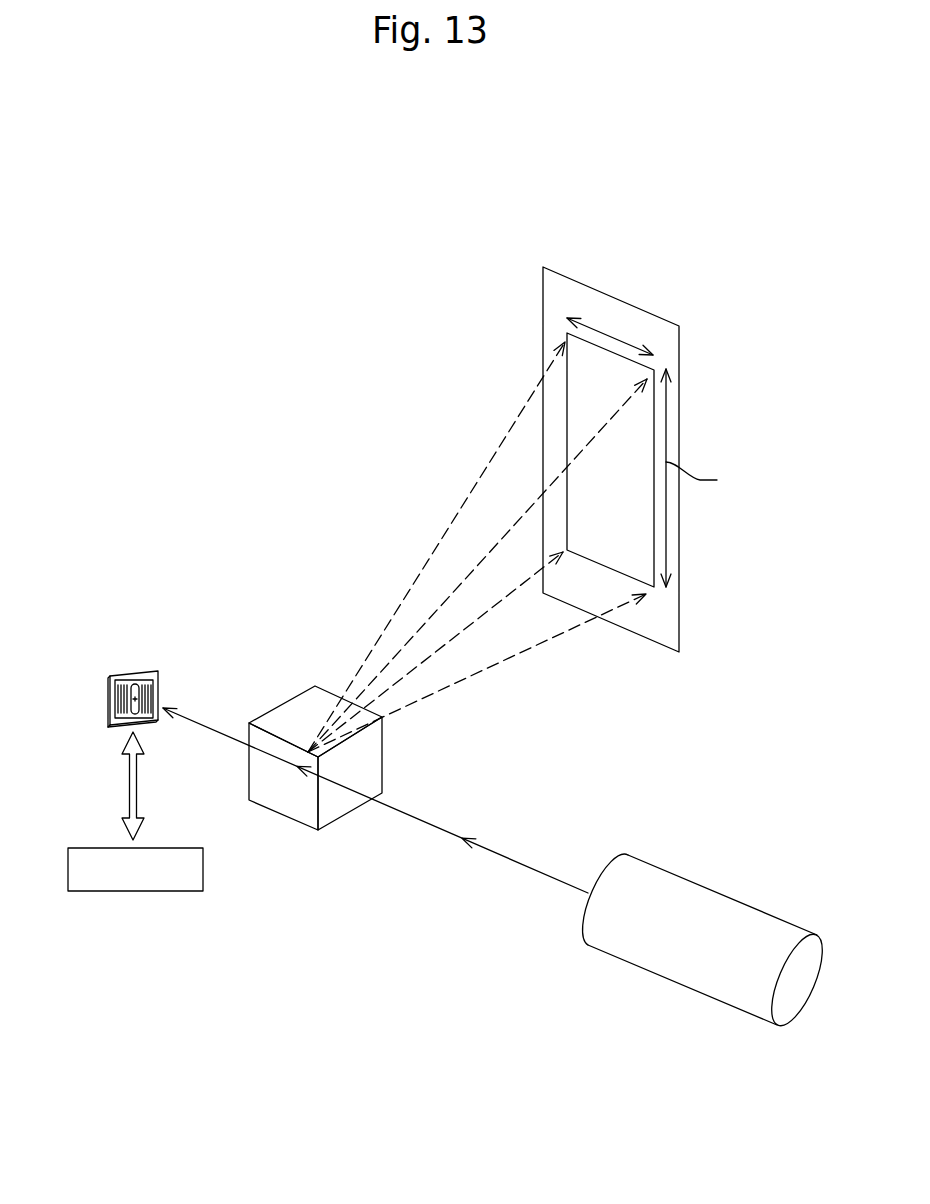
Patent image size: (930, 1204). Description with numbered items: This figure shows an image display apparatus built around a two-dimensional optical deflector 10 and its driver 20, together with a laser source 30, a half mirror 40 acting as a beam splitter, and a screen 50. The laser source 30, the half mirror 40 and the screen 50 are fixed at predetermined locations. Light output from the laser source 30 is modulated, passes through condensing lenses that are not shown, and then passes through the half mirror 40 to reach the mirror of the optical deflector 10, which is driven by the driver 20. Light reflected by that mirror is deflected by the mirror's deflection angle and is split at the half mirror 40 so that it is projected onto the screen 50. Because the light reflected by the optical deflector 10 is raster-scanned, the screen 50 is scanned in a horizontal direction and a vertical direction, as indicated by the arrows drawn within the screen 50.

The two-dimensional optical deflector 10 is at (132, 673).
The driver 20 is at (148, 892).
The laser source 30 is at (668, 868).
The half mirror 40 is at (332, 808).
The screen 50 is at (578, 280).